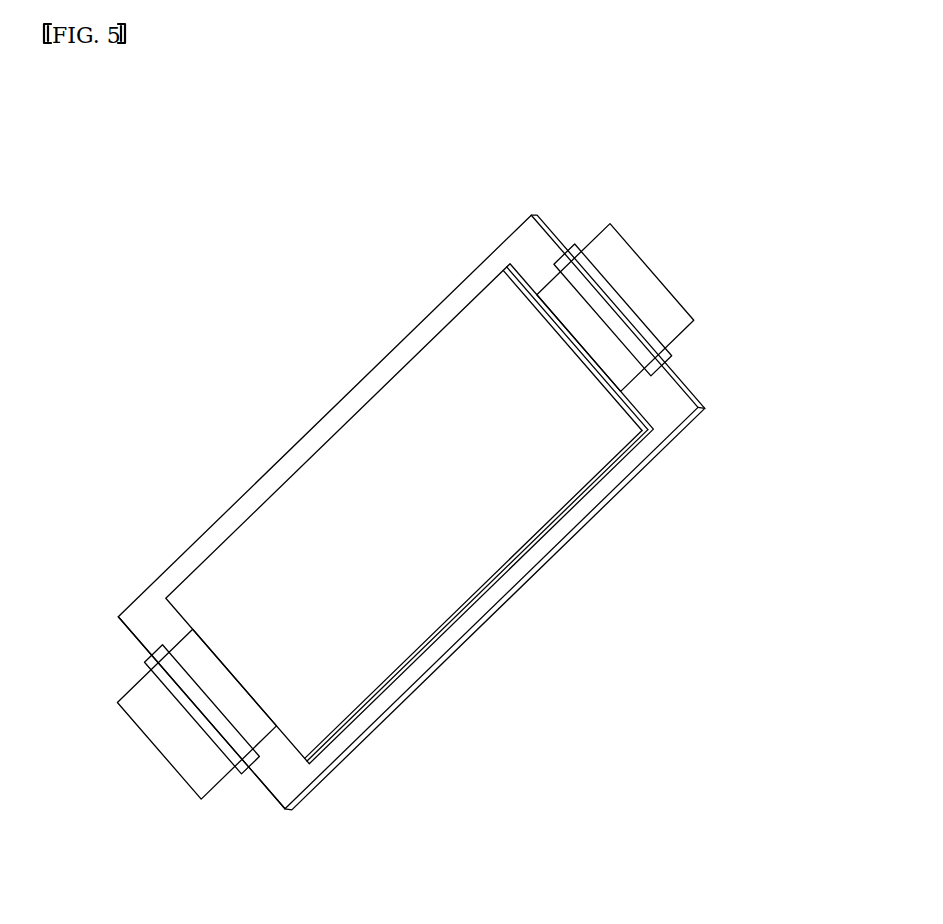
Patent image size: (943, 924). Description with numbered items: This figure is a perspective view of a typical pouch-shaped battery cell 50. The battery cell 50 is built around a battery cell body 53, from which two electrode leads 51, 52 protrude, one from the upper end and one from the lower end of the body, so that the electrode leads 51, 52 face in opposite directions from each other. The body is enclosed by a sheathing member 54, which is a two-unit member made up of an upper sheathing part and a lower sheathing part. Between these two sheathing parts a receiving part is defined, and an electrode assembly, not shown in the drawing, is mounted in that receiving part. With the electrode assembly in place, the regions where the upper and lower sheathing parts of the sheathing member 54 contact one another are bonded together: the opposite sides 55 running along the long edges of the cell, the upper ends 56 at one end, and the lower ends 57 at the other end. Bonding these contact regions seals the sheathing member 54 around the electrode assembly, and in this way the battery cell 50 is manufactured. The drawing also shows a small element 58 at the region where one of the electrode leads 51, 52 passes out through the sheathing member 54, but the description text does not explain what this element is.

The pouch-shaped battery cell 50 is at (110, 224).
The electrode lead 51 is at (180, 752).
The electrode lead 52 is at (655, 285).
The battery cell body 53 is at (351, 438).
The sheathing member 54 is at (515, 229).
The opposite sides 55 is at (517, 580).
The upper ends 56 is at (152, 613).
The lower ends 57 is at (687, 405).
The insulating tape 58 is at (572, 250).